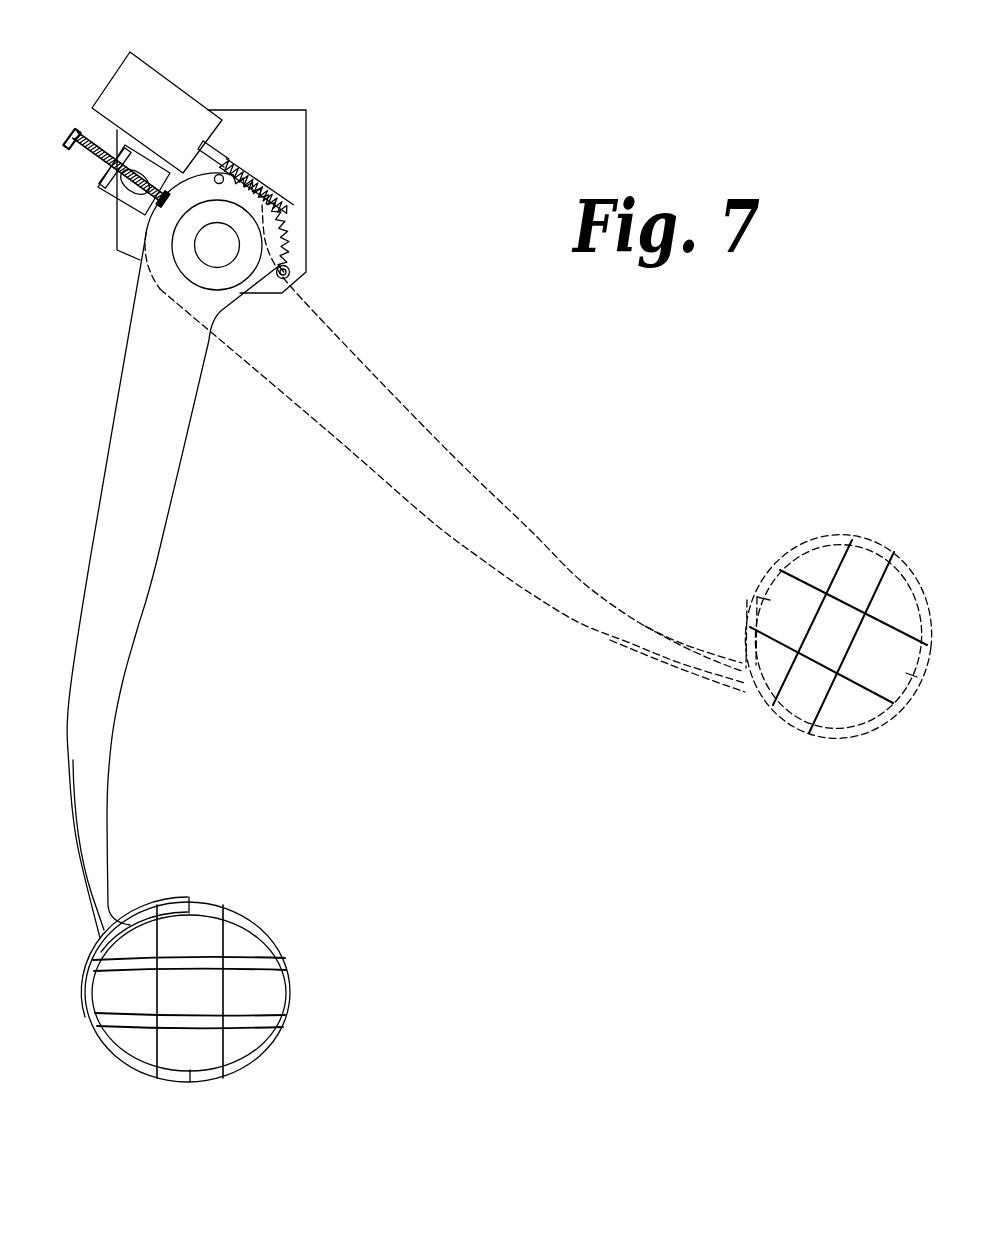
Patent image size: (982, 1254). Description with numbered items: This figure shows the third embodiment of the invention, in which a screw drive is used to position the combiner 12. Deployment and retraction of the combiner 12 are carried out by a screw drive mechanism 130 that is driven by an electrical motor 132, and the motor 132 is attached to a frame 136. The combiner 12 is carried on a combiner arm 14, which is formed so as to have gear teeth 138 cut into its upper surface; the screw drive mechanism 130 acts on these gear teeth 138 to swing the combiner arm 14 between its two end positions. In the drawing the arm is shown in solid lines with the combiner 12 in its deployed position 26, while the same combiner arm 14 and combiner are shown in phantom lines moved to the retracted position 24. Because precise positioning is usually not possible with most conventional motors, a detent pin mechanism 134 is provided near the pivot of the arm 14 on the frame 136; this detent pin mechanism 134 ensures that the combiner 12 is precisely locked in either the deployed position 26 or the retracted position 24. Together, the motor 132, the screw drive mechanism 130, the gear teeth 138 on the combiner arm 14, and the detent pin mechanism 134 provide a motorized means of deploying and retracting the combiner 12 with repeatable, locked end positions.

The combiner 12 is at (278, 938).
The combiner arm 14 is at (137, 632).
The retracted position 24 is at (757, 568).
The deployed position 26 is at (238, 878).
The screw drive mechanism 130 is at (280, 192).
The electrical motor 132 is at (173, 83).
The detent pin mechanism 134 is at (118, 208).
The frame 136 is at (293, 135).
The gear teeth 138 is at (283, 243).